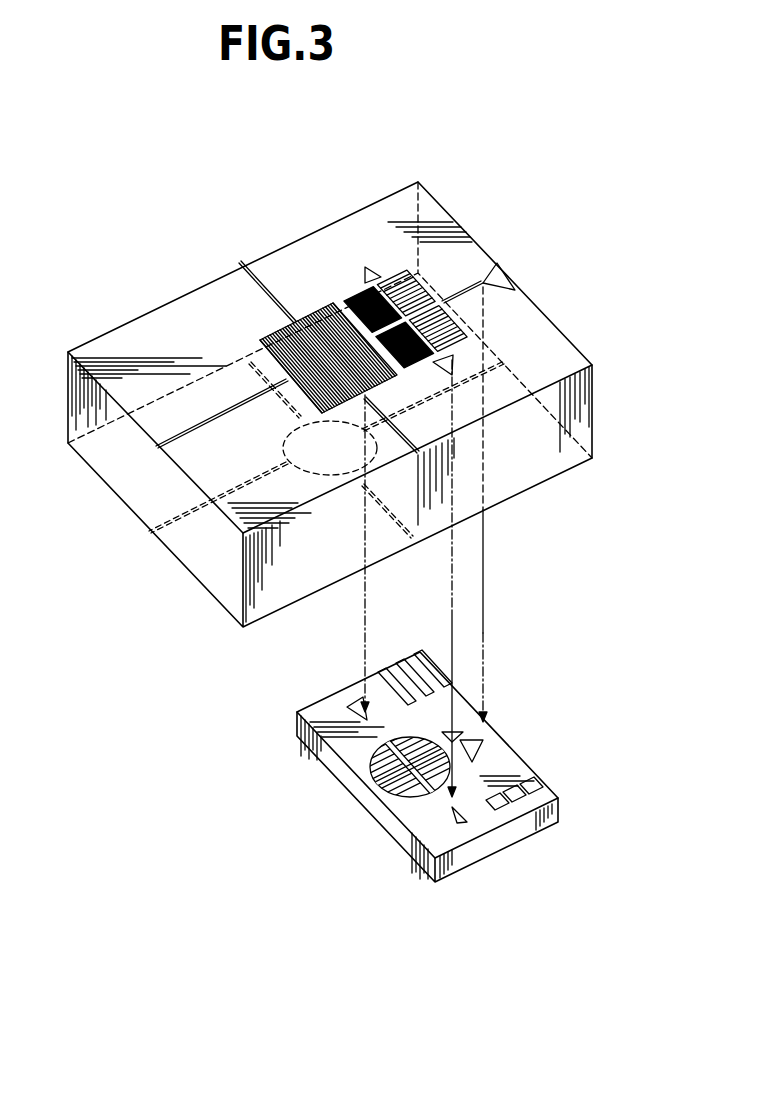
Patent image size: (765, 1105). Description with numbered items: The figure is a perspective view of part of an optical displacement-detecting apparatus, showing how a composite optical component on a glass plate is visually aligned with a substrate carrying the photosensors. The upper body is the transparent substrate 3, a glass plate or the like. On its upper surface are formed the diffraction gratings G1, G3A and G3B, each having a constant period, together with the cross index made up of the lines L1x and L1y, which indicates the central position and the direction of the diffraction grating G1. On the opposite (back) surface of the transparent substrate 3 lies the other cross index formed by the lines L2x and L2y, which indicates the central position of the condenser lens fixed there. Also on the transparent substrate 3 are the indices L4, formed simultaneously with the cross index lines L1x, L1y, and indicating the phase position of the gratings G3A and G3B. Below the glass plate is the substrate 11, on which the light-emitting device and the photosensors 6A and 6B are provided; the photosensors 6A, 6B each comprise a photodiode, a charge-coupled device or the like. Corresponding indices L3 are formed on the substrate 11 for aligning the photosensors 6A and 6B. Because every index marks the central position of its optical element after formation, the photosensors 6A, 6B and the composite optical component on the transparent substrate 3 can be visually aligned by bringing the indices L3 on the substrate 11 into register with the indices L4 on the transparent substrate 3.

The transparent substrate 3 is at (597, 409).
The substrate 11 is at (558, 808).
The photosensor 6A is at (372, 750).
The photosensor 6B is at (418, 740).
The diffraction grating G1 is at (268, 325).
The diffraction grating G3A is at (347, 286).
The diffraction grating G3B is at (396, 265).
The cross index L1x is at (512, 265).
The cross index L1y is at (234, 258).
The cross index L2x is at (146, 539).
The cross index L2y is at (424, 559).
The indices L3 is at (357, 702).
The indices L4 is at (362, 270).